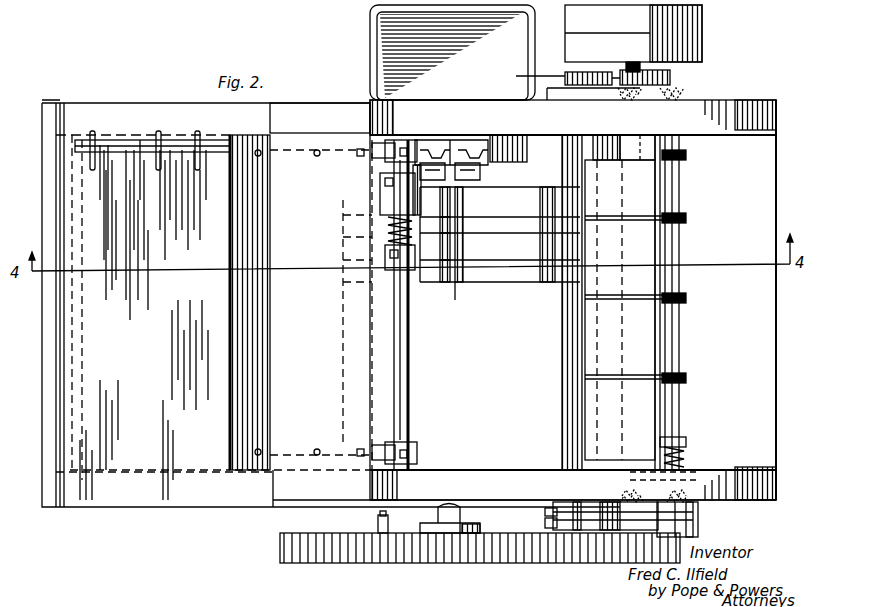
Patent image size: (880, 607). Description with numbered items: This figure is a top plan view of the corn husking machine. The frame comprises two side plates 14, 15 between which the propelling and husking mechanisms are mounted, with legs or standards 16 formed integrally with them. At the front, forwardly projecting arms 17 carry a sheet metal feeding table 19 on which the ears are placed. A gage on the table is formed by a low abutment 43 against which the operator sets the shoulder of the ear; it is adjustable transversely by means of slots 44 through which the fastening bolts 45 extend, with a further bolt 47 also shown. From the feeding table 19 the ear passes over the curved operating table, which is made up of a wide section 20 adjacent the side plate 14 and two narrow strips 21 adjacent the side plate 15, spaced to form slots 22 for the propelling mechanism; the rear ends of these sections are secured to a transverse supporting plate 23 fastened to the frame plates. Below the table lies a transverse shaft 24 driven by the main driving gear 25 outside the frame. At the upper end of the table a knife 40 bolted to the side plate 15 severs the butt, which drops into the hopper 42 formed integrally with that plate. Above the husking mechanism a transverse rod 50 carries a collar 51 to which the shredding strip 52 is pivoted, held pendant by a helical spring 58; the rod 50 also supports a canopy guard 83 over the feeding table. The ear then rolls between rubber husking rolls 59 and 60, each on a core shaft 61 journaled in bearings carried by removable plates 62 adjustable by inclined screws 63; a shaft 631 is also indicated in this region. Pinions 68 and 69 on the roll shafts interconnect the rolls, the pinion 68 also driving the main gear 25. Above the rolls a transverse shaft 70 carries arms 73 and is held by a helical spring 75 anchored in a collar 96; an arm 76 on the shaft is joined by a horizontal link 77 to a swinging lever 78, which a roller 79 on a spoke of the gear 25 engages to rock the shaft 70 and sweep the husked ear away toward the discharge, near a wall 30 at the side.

The side plate 14 is at (736, 470).
The side plate 15 is at (722, 105).
The legs or standards 16 is at (750, 2).
The forwardly projecting arms 17 is at (278, 508).
The feeding table 19 is at (144, 320).
The wide section 20 is at (573, 300).
The narrow strips 21 is at (475, 234).
The slots 22 is at (500, 225).
The transverse supporting plate 23 is at (565, 150).
The transverse shaft 24 is at (446, 282).
The main driving gear 25 is at (342, 563).
The housing wall 30 is at (735, 340).
The knife 40 is at (450, 172).
The hopper 42 is at (452, 52).
The low abutment 43 is at (112, 160).
The slots 44 is at (620, 310).
The fastening bolts 45 is at (157, 135).
The pin 47 is at (198, 131).
The transverse rod 50 is at (409, 360).
The collar 51 is at (421, 200).
The strip 52 is at (380, 182).
The helical spring 58 is at (412, 238).
The husking roll 59 is at (603, 137).
The lower rear husking roll 60 is at (642, 138).
The shaft 61 is at (600, 72).
The plates 62 is at (588, 505).
The inclined screws 63 is at (652, 92).
The pinion 68 is at (660, 542).
The pinion 69 is at (530, 75).
The transverse shaft 70 is at (680, 180).
The arms 73 is at (610, 360).
The helical spring 75 is at (684, 457).
The arm 76 is at (700, 524).
The horizontal link 77 is at (545, 511).
The swinging lever 78 is at (545, 523).
The roller 79 is at (378, 524).
The guard 83 is at (301, 286).
The collar 96 is at (684, 440).
The shaft 631 is at (626, 64).